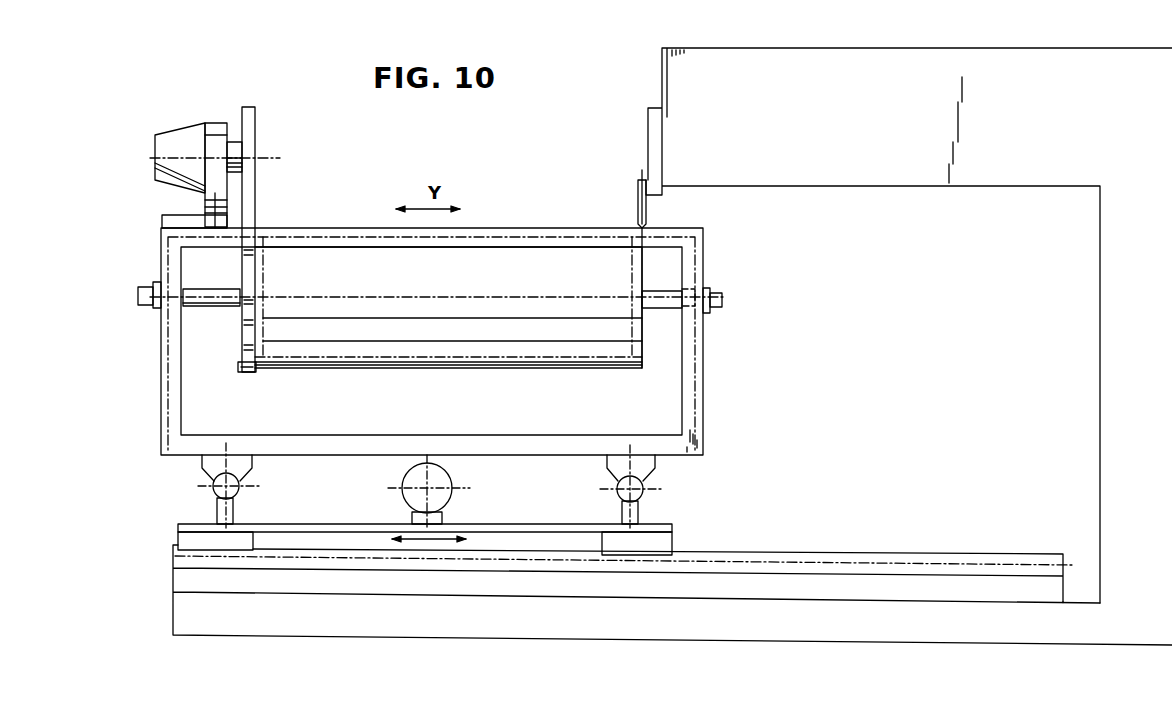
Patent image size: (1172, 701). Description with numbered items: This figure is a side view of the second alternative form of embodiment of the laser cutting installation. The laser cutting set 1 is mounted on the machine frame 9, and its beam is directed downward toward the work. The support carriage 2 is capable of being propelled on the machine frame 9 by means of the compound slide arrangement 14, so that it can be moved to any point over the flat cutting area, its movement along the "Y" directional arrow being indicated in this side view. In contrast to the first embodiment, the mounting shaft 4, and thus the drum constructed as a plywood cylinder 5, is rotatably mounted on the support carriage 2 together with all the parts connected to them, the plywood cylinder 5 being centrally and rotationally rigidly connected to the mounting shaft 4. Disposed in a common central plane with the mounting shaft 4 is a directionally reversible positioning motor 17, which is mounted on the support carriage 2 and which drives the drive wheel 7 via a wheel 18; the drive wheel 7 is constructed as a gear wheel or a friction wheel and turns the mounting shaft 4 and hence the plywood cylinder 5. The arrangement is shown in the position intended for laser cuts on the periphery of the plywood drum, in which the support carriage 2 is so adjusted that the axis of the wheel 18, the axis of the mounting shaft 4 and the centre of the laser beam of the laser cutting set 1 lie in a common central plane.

The laser cutting set 1 is at (638, 198).
The support carriage 2 is at (702, 409).
The mounting shaft 4 is at (670, 302).
The plywood cylinder 5 is at (512, 347).
The drive wheel 7 is at (242, 373).
The machine frame 9 is at (677, 67).
The compound slide arrangement 14 is at (672, 527).
The positioning motor 17 is at (188, 136).
The wheel 18 is at (247, 128).